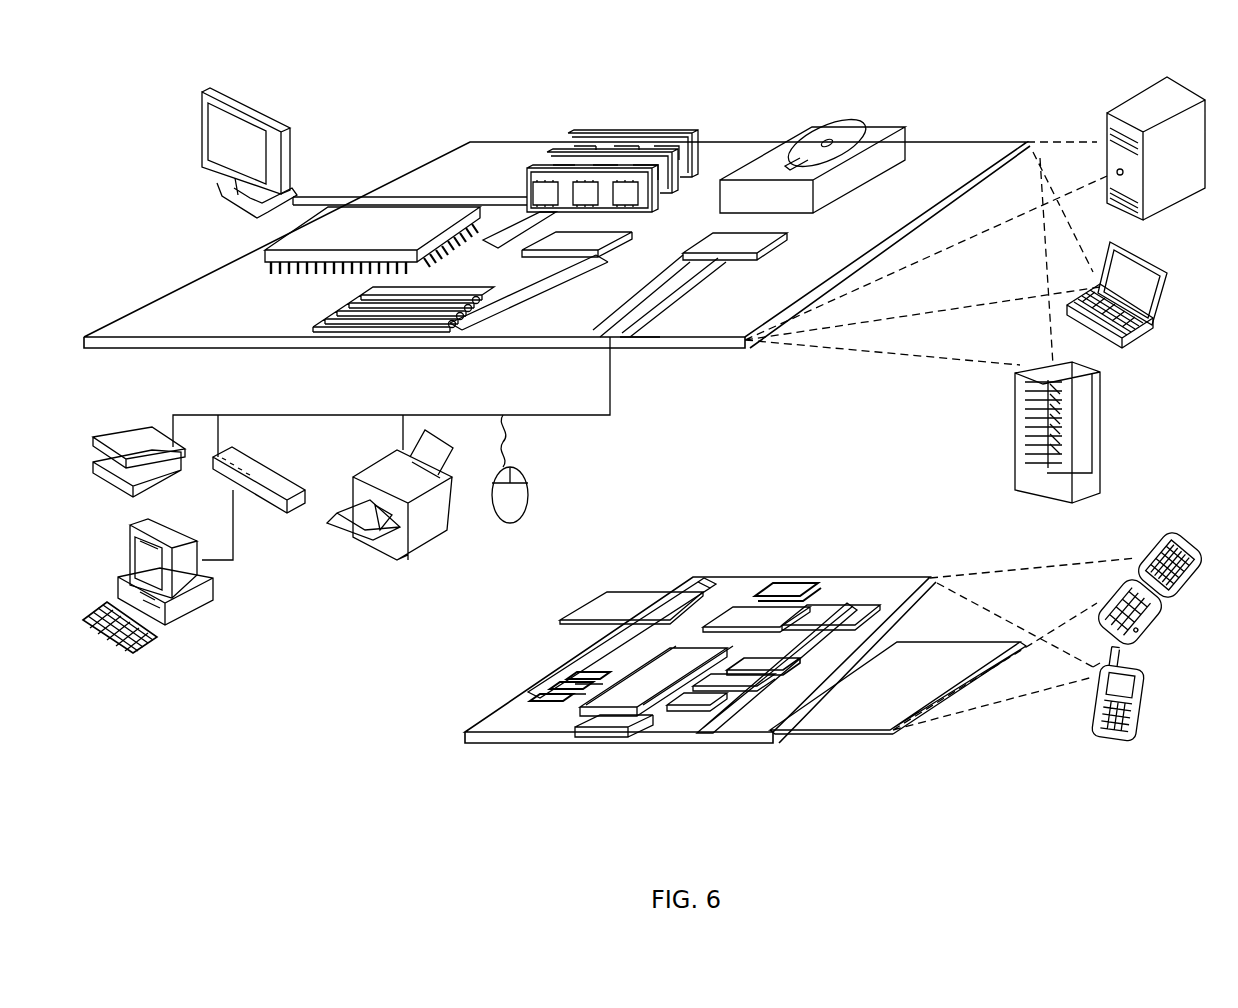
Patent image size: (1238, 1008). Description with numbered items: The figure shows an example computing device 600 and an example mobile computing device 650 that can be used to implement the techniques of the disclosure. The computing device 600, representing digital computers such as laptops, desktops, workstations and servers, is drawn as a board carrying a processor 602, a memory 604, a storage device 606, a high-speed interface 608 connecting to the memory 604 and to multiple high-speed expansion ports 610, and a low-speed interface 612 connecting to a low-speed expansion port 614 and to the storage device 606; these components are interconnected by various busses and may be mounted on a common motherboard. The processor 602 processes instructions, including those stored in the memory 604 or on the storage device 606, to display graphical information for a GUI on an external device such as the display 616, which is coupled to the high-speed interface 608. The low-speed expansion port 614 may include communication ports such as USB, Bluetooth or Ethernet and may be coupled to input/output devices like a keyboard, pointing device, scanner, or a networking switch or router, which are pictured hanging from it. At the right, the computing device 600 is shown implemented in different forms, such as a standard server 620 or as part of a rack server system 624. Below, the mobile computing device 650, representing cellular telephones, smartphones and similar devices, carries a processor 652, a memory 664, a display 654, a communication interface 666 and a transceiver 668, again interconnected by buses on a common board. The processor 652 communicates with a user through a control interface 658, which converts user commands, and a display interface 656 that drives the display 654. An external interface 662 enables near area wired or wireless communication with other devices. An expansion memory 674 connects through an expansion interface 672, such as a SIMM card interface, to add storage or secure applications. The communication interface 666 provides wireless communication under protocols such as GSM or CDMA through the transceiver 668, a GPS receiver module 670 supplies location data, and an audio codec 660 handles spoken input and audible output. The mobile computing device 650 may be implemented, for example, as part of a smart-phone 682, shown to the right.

The computing device 600 is at (386, 114).
The processor 602 is at (265, 257).
The memory 604 is at (578, 135).
The storage device 606 is at (795, 126).
The high-speed interface 608 is at (493, 197).
The high-speed expansion ports 610 is at (320, 307).
The low-speed interface 612 is at (707, 232).
The low-speed expansion port 614 is at (637, 340).
The display 616 is at (207, 92).
The standard server 620 is at (1094, 127).
The rack server system 624 is at (1015, 457).
The mobile computing device 650 is at (440, 742).
The processor 652 is at (630, 700).
The display 654 is at (857, 717).
The display interface 656 is at (708, 740).
The control interface 658 is at (725, 712).
The audio codec 660 is at (757, 697).
The external interface 662 is at (598, 742).
The memory 664 is at (552, 690).
The communication interface 666 is at (750, 612).
The transceiver 668 is at (818, 604).
The GPS receiver module 670 is at (792, 588).
The expansion interface 672 is at (672, 587).
The expansion memory 674 is at (610, 592).
The smart-phone 682 is at (1090, 716).